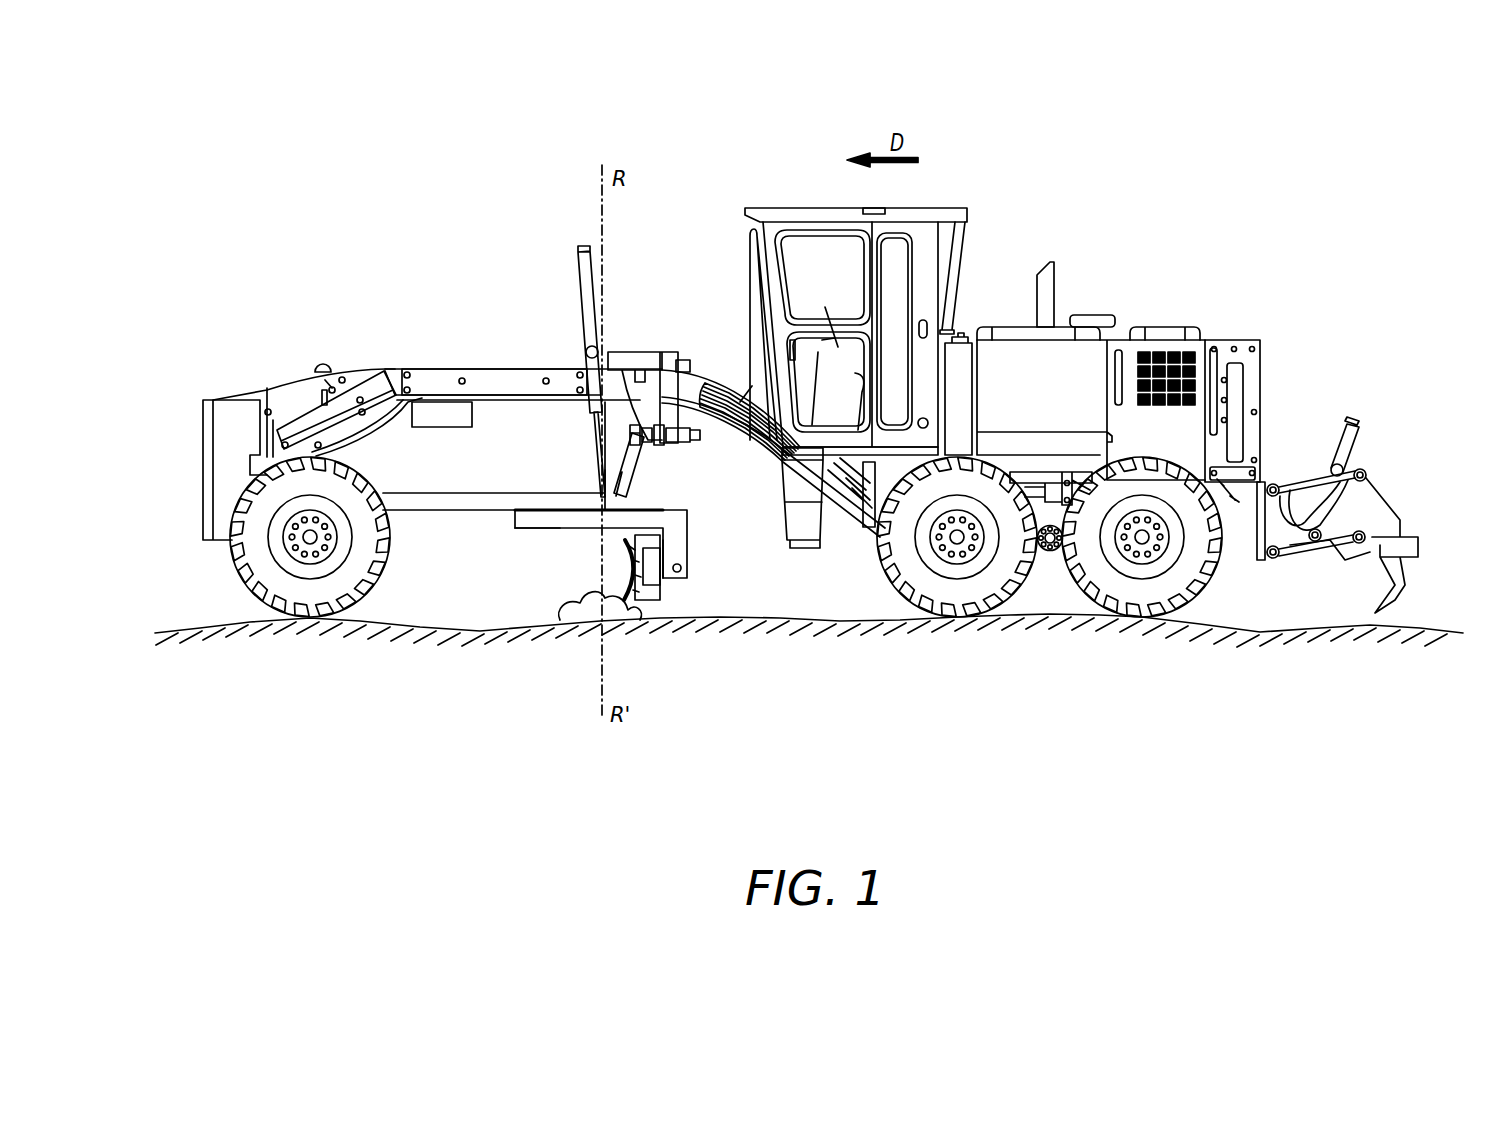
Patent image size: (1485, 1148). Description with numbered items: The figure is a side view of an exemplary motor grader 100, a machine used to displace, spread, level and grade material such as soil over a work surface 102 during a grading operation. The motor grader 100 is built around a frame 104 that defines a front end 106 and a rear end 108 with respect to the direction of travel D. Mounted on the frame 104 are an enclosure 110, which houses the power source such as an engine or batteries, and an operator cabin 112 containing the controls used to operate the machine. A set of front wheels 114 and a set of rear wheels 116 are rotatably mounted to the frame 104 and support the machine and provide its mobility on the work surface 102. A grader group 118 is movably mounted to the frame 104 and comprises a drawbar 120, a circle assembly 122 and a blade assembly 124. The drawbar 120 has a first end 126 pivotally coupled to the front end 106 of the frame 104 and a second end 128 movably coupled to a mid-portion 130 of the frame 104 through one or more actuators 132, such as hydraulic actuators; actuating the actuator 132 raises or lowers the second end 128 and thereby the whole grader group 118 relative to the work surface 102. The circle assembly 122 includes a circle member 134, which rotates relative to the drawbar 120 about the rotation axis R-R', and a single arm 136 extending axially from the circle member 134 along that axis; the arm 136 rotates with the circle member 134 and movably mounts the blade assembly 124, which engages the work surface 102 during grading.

The motor grader 100 is at (1328, 137).
The work surface 102 is at (836, 598).
The frame 104 is at (770, 460).
The front end 106 is at (206, 370).
The rear end 108 is at (1330, 383).
The enclosure 110 is at (1078, 357).
The operator cabin 112 is at (928, 215).
The front wheels 114 is at (320, 590).
The rear wheels 116 is at (962, 598).
The grader group 118 is at (529, 472).
The drawbar 120 is at (445, 520).
The circle assembly 122 is at (517, 552).
The blade assembly 124 is at (606, 560).
The first end 126 is at (399, 474).
The second end 128 is at (579, 472).
The mid-portion 130 is at (636, 324).
The actuator 132 is at (579, 254).
The circle member 134 is at (687, 549).
The arm 136 is at (688, 550).